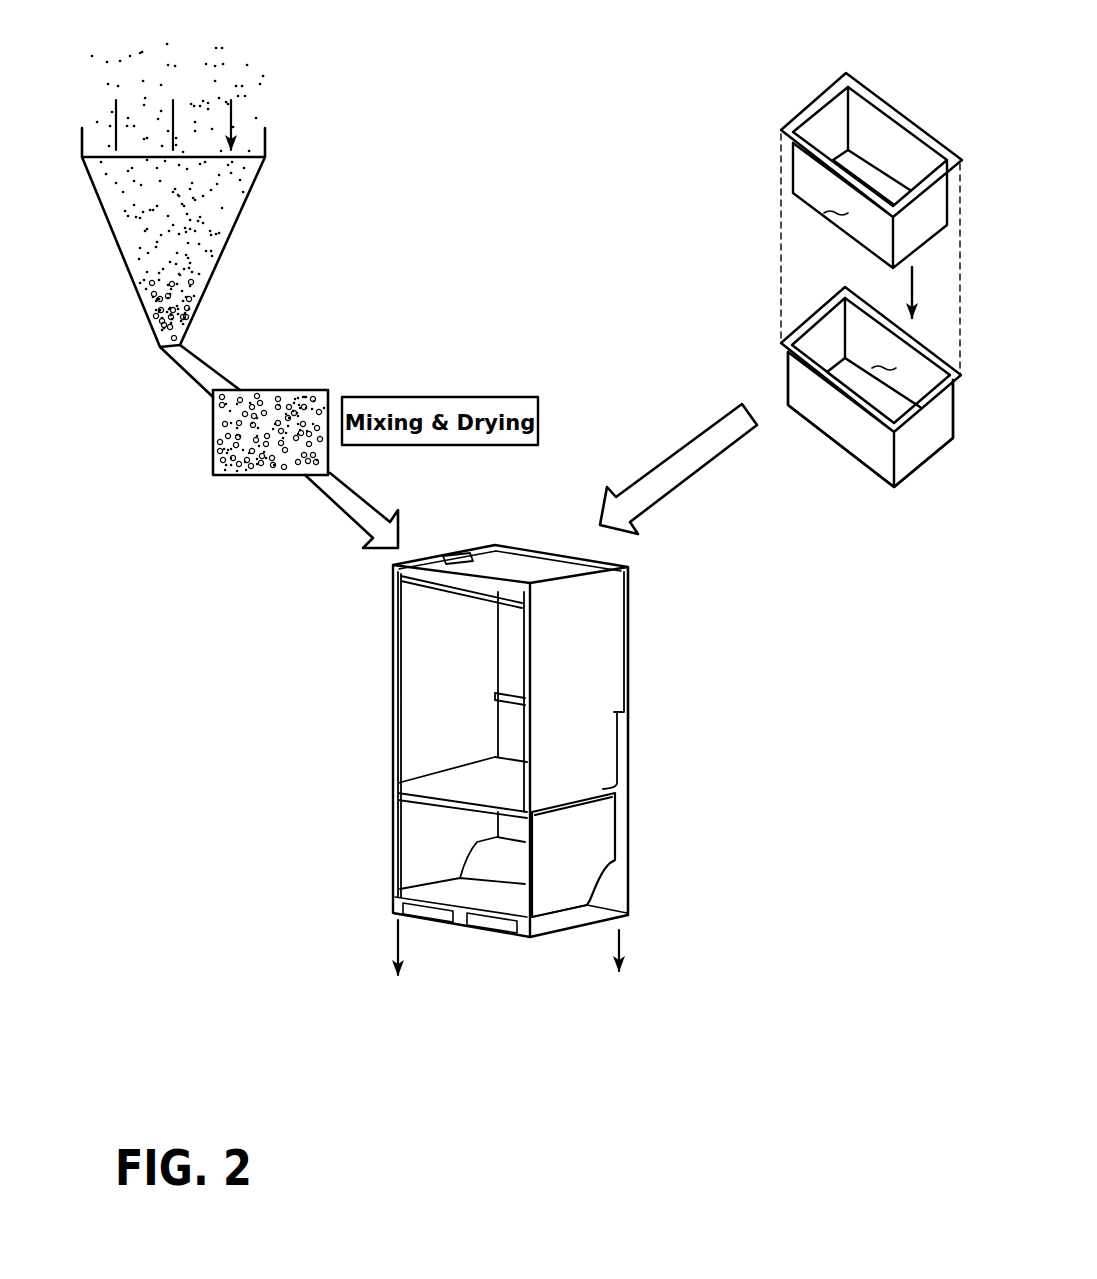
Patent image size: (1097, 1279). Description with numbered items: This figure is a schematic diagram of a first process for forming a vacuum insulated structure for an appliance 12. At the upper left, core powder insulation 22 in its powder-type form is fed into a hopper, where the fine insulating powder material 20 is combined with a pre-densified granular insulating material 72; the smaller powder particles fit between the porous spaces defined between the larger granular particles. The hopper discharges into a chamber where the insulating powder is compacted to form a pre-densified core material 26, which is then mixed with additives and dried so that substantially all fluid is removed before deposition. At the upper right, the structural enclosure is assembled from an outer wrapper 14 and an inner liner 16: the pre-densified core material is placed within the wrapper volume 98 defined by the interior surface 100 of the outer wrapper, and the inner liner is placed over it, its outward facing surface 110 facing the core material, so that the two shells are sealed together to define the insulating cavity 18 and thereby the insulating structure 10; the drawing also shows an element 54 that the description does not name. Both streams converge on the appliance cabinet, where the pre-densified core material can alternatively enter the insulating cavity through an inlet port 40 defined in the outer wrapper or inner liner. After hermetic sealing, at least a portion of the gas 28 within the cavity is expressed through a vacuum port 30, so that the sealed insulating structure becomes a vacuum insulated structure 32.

The insulating structure 10 is at (604, 663).
The appliance 12 is at (687, 893).
The outer wrapper 14 is at (918, 447).
The inner liner 16 is at (900, 118).
The insulating cavity 18 is at (420, 661).
The insulating powder material 20 is at (148, 377).
The core powder insulation 22 is at (247, 84).
The pre-densified core material 26 is at (211, 447).
The gas 28 is at (396, 933).
The vacuum port 30 is at (625, 921).
The vacuum insulated structure 32 is at (634, 678).
The inlet port 40 is at (452, 550).
The container body 54 is at (824, 339).
The pre-densified granular insulating material 72 is at (203, 272).
The wrapper volume 98 is at (888, 405).
The interior surface 100 is at (884, 354).
The outward facing surface 110 is at (837, 200).